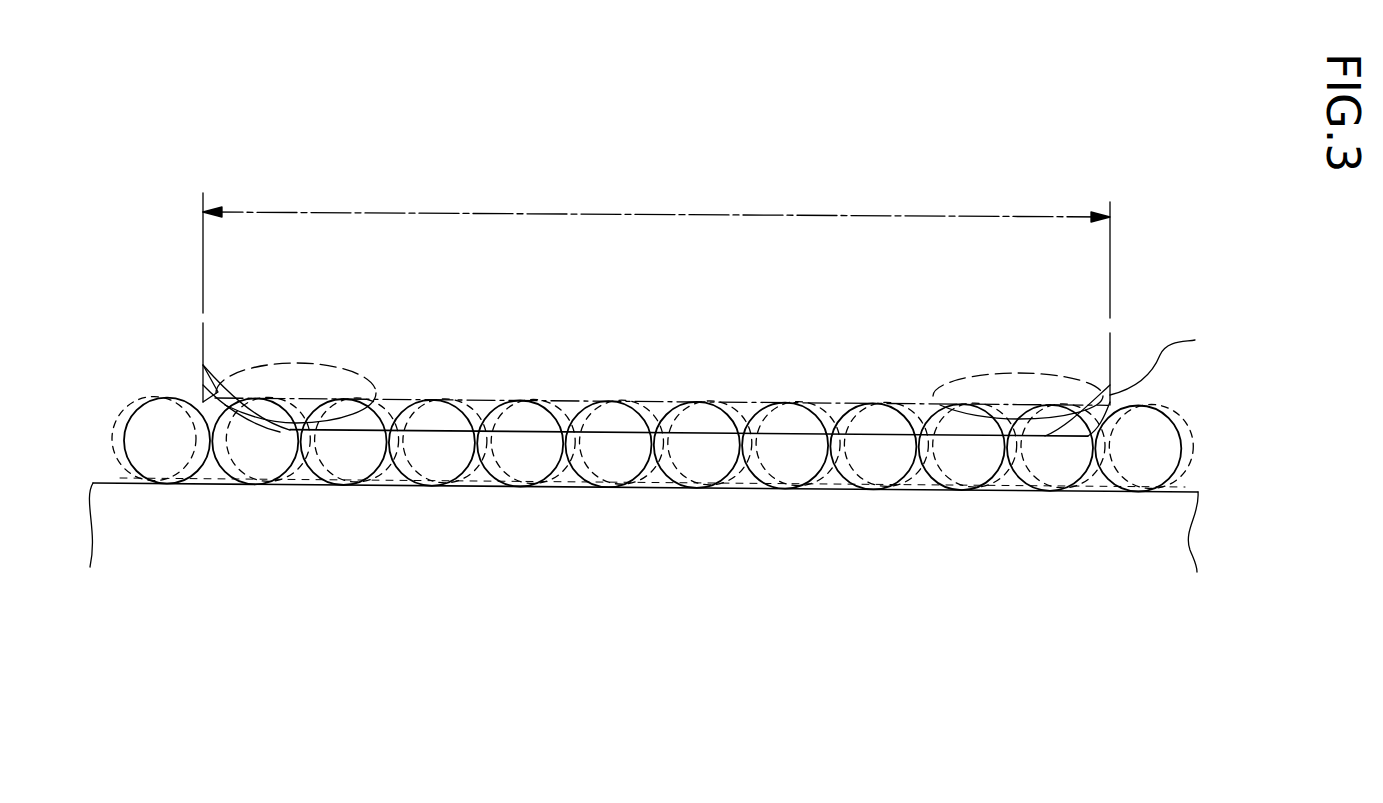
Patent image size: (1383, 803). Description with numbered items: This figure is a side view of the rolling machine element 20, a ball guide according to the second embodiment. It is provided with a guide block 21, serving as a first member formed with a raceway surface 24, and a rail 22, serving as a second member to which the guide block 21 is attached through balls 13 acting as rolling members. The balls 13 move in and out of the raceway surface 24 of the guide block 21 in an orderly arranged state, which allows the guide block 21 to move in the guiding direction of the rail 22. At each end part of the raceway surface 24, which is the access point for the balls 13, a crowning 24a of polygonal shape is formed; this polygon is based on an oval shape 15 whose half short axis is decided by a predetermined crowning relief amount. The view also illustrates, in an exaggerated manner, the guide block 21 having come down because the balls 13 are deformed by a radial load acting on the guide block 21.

The balls 13 is at (370, 487).
The oval shape 15 is at (299, 363).
The rolling machine element 20 is at (1160, 283).
The guide block 21 is at (1110, 390).
The rail 22 is at (113, 480).
The raceway surface 24 is at (565, 402).
The crowning 24a is at (235, 412).